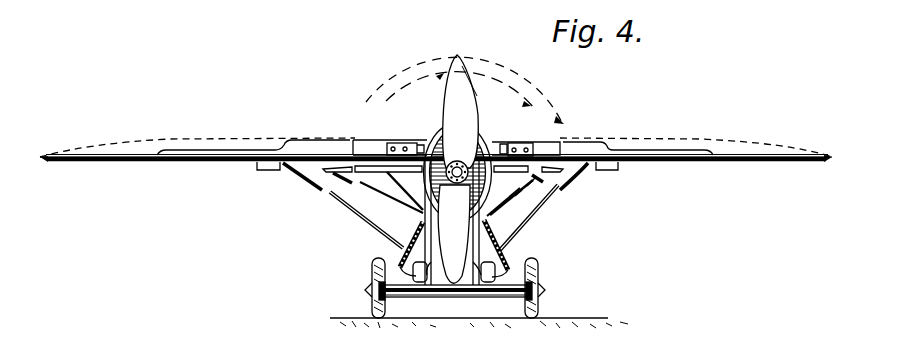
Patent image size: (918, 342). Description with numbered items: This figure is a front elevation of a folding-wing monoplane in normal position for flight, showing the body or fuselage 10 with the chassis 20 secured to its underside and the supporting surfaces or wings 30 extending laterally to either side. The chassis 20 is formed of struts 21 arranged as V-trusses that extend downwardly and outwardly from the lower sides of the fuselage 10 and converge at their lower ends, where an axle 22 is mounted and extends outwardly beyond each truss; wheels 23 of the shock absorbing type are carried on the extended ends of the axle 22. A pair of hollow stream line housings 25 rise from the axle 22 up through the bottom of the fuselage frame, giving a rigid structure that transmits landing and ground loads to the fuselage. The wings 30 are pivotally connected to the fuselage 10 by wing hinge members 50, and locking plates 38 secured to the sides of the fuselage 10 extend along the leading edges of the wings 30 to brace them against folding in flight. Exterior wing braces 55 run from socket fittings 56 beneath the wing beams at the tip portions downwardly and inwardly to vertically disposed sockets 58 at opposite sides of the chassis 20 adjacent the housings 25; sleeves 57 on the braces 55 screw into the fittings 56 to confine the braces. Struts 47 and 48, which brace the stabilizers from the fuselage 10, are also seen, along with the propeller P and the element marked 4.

The propeller P is at (473, 84).
The strut 4 is at (388, 172).
The body or fuselage 10 is at (484, 134).
The chassis 20 is at (455, 300).
The struts 21 is at (402, 259).
The axle 22 is at (415, 294).
The wheels 23 is at (539, 268).
The stream line housings 25 is at (420, 228).
The wings 30 is at (290, 148).
The locking plates 38 is at (400, 140).
The strut 47 is at (521, 186).
The strut 48 is at (527, 194).
The wing hinge members 50 is at (421, 136).
The exterior wing braces 55 is at (341, 204).
The socket fittings 56 is at (259, 166).
The sleeves 57 is at (283, 166).
The sockets 58 is at (507, 262).